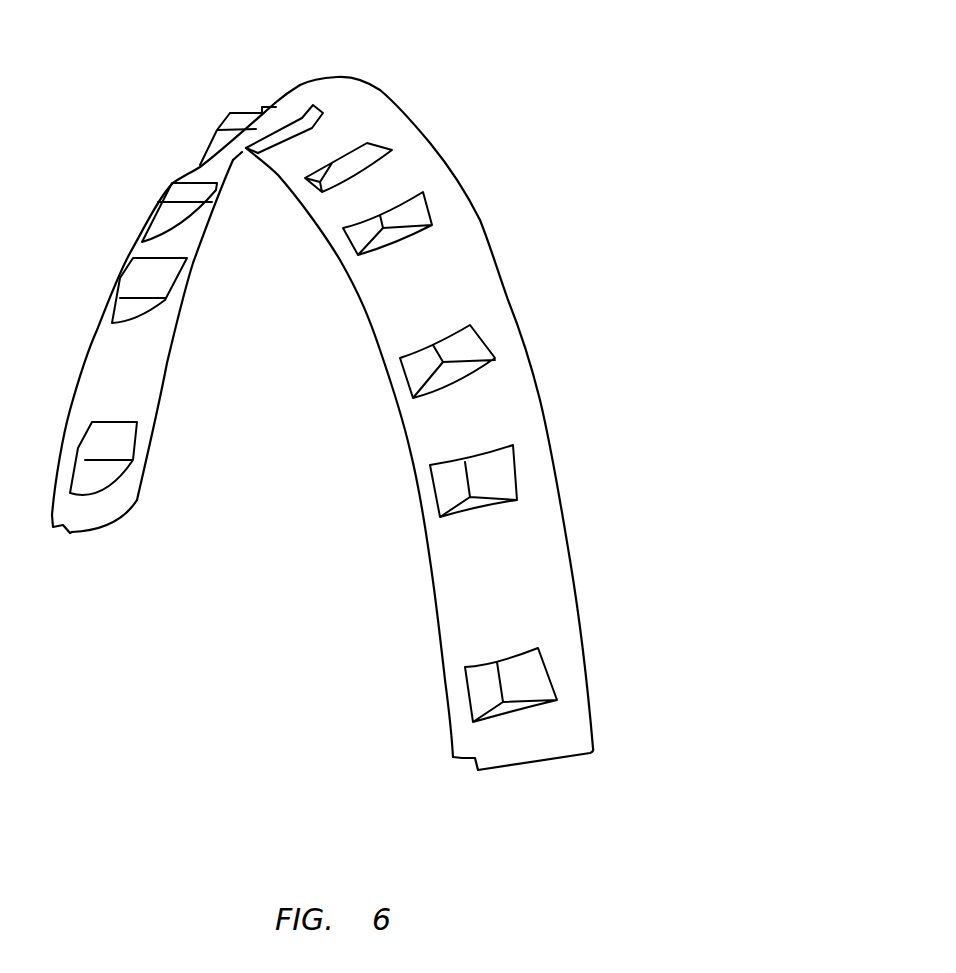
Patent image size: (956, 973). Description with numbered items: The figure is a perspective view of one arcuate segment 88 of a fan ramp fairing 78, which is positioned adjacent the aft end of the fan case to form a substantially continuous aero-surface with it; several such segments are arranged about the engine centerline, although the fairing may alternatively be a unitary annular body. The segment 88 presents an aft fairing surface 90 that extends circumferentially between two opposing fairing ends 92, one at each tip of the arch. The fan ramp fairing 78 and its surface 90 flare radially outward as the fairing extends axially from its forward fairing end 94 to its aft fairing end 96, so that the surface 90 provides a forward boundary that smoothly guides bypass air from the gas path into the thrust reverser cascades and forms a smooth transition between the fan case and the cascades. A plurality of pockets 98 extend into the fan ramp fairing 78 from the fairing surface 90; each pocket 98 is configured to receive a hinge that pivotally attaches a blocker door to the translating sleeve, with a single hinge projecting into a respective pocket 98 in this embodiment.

The fan ramp fairing 78 is at (508, 168).
The arcuate segment 88 is at (333, 462).
The aft fairing surface 90 is at (462, 585).
The fairing end 92 is at (95, 532).
The forward fairing end 94 is at (52, 511).
The aft fairing end 96 is at (148, 470).
The pocket 98 is at (499, 480).